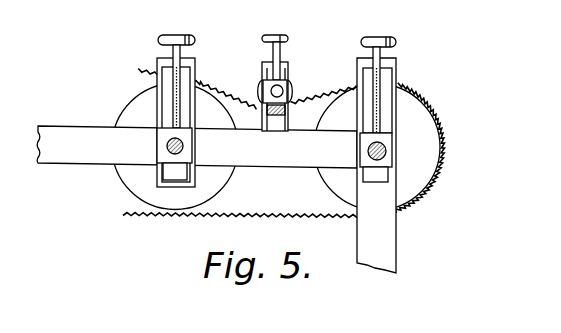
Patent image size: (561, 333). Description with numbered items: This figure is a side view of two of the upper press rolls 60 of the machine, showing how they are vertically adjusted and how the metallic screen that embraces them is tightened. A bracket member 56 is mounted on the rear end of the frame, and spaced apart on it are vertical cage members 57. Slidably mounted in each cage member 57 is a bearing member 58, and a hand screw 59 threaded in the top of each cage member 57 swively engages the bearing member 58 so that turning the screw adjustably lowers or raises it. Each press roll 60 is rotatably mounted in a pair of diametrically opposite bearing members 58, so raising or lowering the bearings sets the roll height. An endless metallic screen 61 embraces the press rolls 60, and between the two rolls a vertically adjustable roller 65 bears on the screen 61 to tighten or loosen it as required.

The bracket member 56 is at (68, 135).
The cage member 57 is at (191, 63).
The bearing member 58 is at (191, 137).
The hand screw 59 is at (173, 50).
The press roll 60 is at (222, 175).
The endless metallic screen 61 is at (290, 217).
The vertically adjustable roller 65 is at (289, 82).